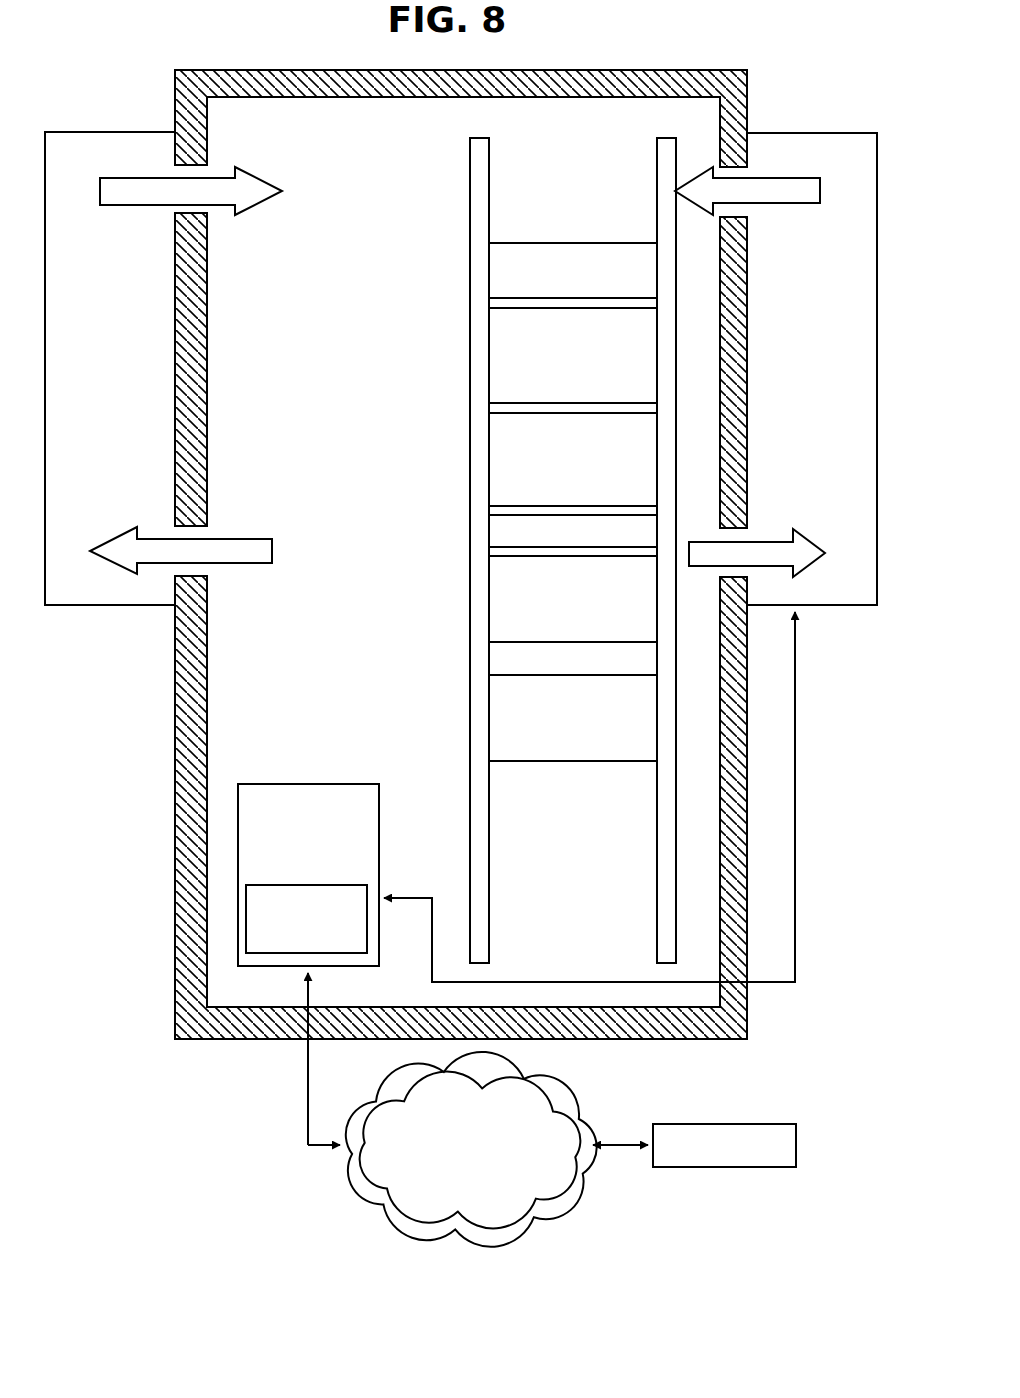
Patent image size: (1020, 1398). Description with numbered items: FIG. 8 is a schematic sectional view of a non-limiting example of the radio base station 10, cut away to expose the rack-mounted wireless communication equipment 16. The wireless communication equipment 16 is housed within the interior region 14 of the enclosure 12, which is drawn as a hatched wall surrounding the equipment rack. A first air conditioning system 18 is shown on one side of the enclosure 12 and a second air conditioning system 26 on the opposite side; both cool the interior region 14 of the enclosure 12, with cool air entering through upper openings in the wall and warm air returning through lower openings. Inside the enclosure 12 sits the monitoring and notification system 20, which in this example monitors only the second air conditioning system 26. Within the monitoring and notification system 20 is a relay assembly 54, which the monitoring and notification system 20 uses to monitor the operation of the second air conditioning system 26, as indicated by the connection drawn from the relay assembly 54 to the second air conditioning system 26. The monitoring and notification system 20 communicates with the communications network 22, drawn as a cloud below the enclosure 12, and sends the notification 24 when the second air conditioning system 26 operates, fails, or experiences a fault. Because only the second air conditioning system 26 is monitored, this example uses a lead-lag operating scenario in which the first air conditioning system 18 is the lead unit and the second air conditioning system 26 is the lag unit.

The radio base station 10 is at (155, 1107).
The enclosure 12 is at (748, 91).
The interior region 14 is at (398, 112).
The wireless communication equipment 16 is at (666, 142).
The first air conditioning system 18 is at (70, 607).
The monitoring and notification system 20 is at (238, 803).
The communications network 22 is at (352, 1183).
The notification 24 is at (668, 1168).
The second air conditioning system 26 is at (847, 607).
The relay assembly 54 is at (246, 921).